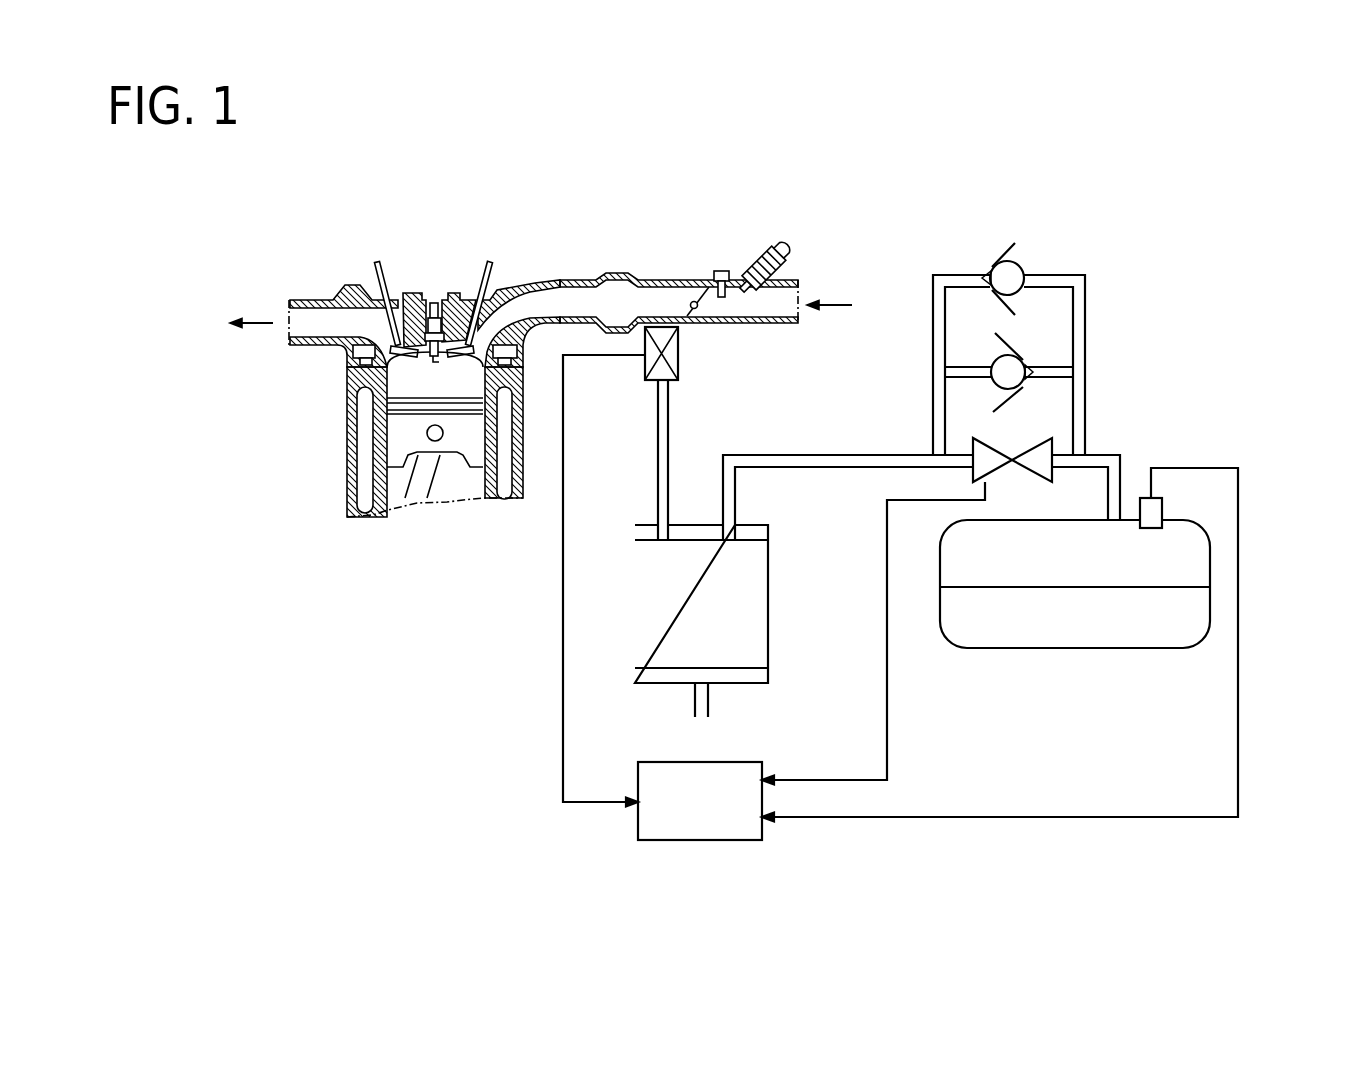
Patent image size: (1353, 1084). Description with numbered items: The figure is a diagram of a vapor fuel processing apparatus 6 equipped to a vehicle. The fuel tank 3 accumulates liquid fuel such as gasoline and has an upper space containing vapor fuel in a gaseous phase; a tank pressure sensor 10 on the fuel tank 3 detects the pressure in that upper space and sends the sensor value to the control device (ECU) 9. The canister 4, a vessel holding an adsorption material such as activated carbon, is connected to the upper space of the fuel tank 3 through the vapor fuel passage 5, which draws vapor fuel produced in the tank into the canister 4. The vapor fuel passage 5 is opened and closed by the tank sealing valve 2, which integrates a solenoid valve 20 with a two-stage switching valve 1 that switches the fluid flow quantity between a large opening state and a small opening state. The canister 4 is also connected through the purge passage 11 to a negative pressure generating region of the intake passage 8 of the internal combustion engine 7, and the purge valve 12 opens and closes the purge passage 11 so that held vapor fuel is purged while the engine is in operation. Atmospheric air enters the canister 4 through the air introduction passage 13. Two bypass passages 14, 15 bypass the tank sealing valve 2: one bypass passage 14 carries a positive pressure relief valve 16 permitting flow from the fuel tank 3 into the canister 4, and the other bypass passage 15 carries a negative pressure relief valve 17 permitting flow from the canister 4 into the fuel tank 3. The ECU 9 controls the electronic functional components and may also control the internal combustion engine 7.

The two-stage switching valve 1 is at (1012, 460).
The tank sealing valve 2 is at (1100, 427).
The fuel tank 3 is at (1055, 648).
The canister 4 is at (753, 616).
The vapor fuel passage 5 is at (800, 462).
The vapor fuel processing apparatus 6 is at (1075, 312).
The internal combustion engine 7 is at (316, 508).
The intake passage 8 is at (662, 303).
The control device (ECU) 9 is at (703, 840).
The tank pressure sensor 10 is at (1160, 512).
The purge passage 11 is at (660, 450).
The purge valve 12 is at (670, 352).
The air introduction passage 13 is at (708, 702).
The bypass passage 14 is at (962, 373).
The bypass passage 15 is at (965, 280).
The positive pressure relief valve 16 is at (1010, 363).
The negative pressure relief valve 17 is at (1017, 267).
The solenoid valve 20 is at (1032, 443).